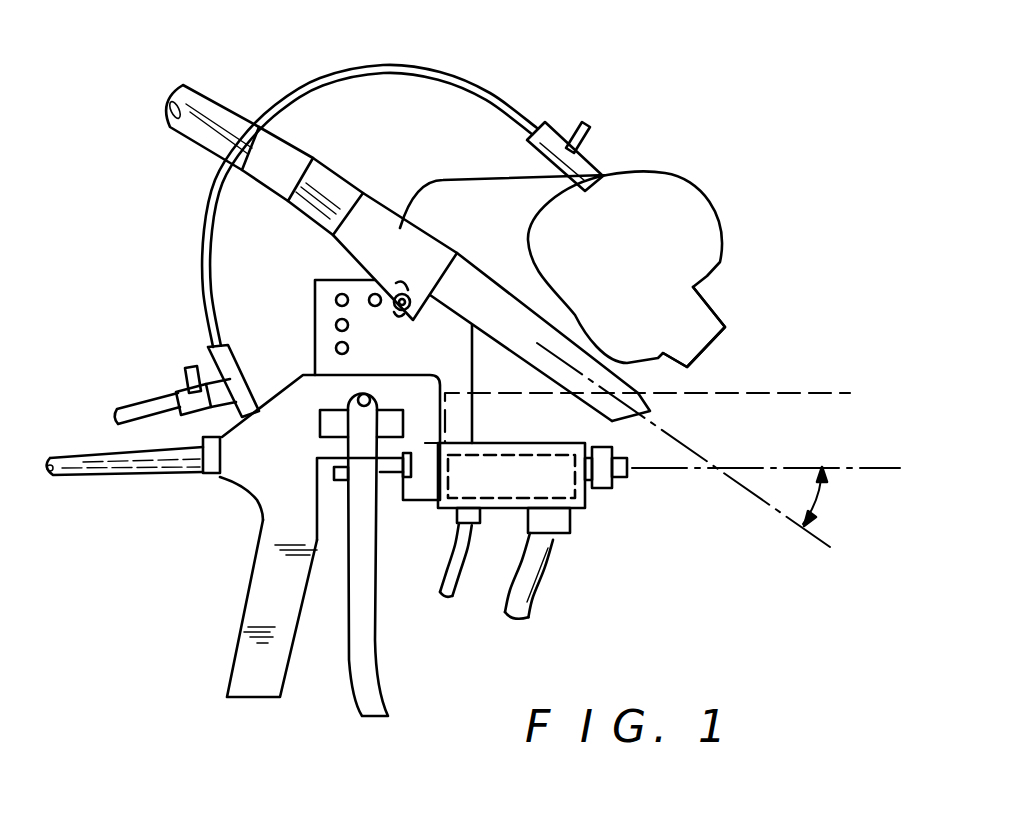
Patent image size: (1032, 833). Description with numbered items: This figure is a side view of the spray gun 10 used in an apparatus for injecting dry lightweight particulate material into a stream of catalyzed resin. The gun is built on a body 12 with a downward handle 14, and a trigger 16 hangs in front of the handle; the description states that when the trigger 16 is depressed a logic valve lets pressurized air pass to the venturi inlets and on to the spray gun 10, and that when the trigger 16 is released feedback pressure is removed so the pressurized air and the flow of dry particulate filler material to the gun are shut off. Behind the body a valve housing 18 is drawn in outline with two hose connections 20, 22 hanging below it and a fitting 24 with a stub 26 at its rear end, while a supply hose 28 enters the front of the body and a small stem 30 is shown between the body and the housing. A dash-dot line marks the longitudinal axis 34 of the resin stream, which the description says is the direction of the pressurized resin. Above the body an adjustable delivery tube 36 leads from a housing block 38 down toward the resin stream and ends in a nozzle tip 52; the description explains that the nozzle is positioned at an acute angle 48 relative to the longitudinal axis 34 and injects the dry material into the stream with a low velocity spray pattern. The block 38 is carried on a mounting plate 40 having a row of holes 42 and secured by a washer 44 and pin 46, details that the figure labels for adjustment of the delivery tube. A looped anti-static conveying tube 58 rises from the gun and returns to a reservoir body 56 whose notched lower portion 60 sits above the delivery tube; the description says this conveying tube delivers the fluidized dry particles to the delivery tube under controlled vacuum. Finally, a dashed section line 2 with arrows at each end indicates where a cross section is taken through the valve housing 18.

The section line 2- 2 is at (423, 430).
The spray gun 10 is at (148, 316).
The gun body 12 is at (285, 408).
The handle 14 is at (245, 660).
The trigger 16 is at (388, 665).
The valve housing 18 is at (506, 470).
The air hose 20 is at (548, 570).
The hose 22 is at (458, 548).
The fitting nut 24 is at (603, 490).
The fitting stub 26 is at (627, 485).
The supply hose 28 is at (90, 468).
The valve stem 30 is at (398, 482).
The horizontal axis 34 is at (773, 466).
The nozzle tube 36 is at (497, 297).
The nozzle housing block 38 is at (385, 212).
The mounting plate 40 is at (400, 354).
The adjustment holes 42 is at (334, 325).
The washer 44 is at (415, 305).
The pin 46 is at (404, 288).
The nozzle angle 48 is at (824, 498).
The nozzle tip 52 is at (657, 412).
The reservoir bottle 56 is at (636, 251).
The hose loop 58 is at (385, 68).
The bottle notch 60 is at (728, 340).